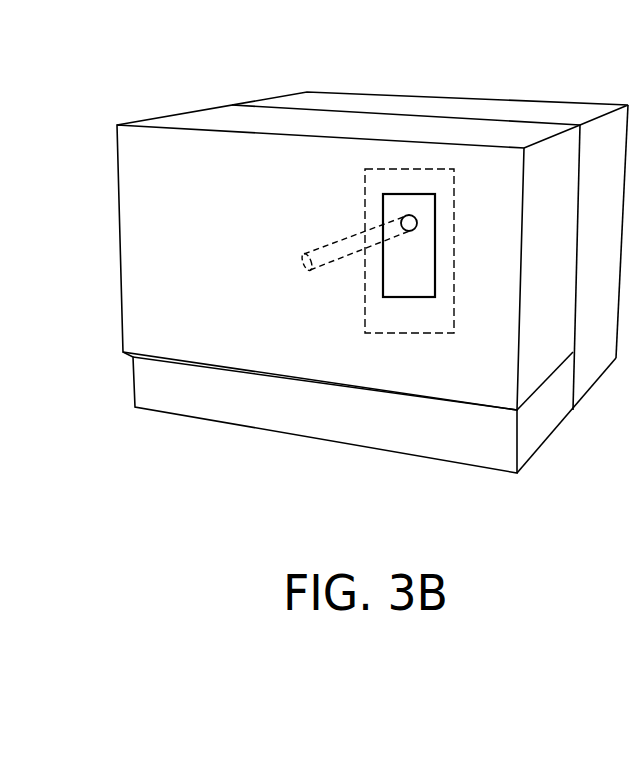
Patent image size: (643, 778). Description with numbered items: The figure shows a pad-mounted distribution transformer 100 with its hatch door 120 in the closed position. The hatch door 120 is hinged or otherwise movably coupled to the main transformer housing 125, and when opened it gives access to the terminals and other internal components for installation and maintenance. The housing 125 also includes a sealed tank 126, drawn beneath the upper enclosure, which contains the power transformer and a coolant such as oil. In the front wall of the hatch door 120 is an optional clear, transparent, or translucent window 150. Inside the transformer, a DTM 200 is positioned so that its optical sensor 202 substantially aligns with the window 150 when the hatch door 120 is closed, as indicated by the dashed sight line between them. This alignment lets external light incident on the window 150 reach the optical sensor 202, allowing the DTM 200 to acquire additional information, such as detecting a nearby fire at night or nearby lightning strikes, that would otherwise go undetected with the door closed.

The pad-mounted distribution transformer 100 is at (356, 241).
The hatch door 120 is at (166, 117).
The housing 125 is at (277, 96).
The sealed tank 126 is at (592, 345).
The window 150 is at (298, 262).
The DTM 200 is at (435, 248).
The optical sensor 202 is at (409, 232).